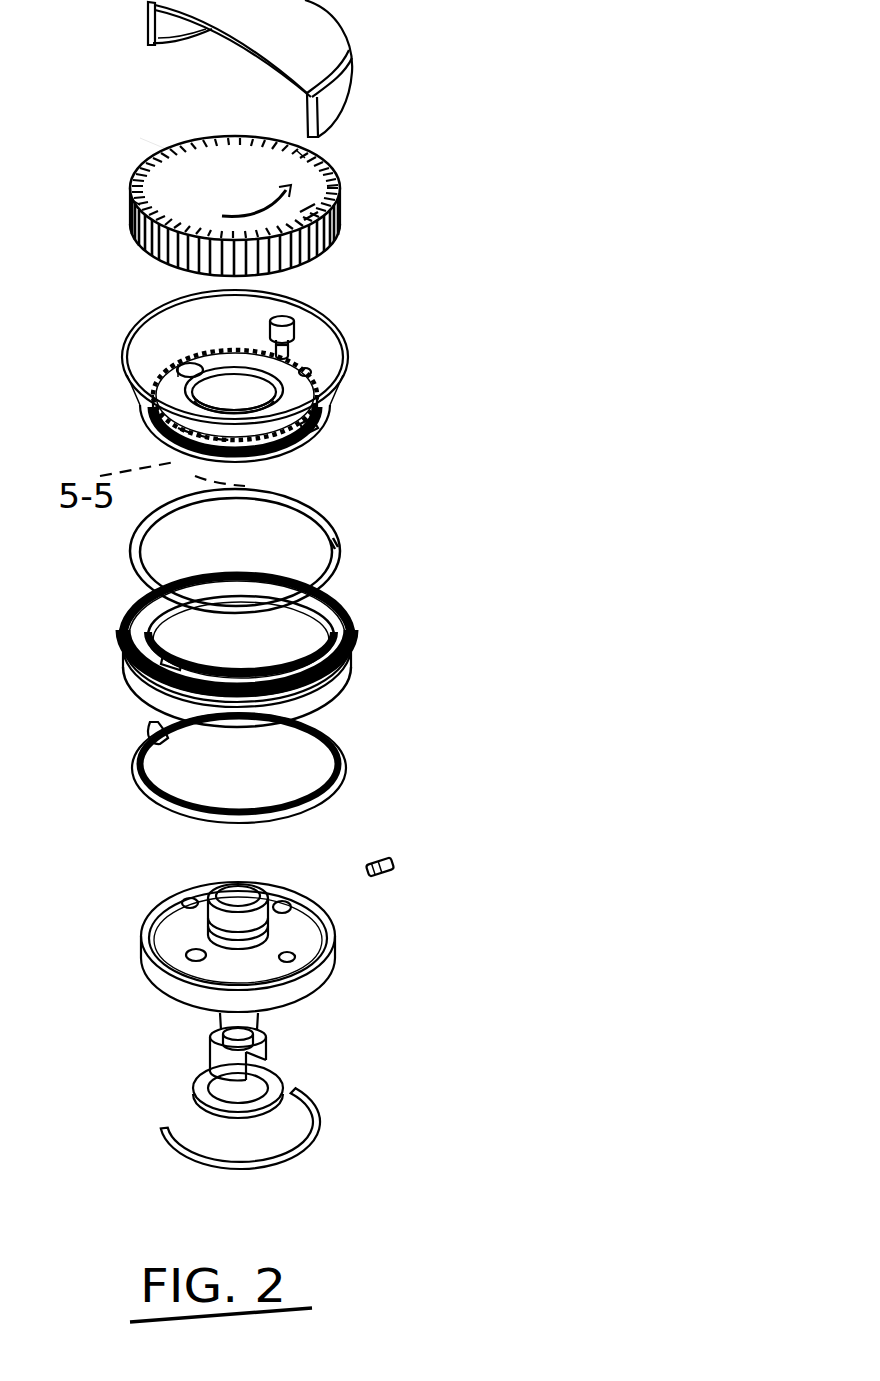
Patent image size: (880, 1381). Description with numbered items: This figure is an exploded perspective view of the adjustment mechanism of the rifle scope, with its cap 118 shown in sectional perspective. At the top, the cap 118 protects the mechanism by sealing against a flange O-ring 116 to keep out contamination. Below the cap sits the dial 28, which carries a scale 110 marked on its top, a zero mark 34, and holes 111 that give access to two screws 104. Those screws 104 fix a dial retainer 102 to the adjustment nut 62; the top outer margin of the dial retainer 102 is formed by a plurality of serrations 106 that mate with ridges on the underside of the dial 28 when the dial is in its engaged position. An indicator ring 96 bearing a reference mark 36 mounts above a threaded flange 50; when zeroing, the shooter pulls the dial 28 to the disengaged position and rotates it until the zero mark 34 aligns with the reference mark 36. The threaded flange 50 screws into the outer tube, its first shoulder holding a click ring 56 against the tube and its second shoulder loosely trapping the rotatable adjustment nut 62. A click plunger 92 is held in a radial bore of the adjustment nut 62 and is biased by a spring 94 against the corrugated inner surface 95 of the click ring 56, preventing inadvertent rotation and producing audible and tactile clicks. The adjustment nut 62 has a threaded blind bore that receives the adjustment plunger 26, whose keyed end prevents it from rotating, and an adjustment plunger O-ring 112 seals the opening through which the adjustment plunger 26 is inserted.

The cap 118 is at (353, 80).
The dial 28 is at (340, 218).
The zero mark 34 is at (327, 240).
The scale 110 is at (174, 153).
The holes 111 is at (300, 148).
The flange O-ring 116 is at (350, 377).
The dial retainer 102 is at (318, 443).
The screws 104 is at (298, 340).
The serrations 106 is at (217, 352).
The indicator ring 96 is at (344, 568).
The reference mark 36 is at (333, 530).
The threaded flange 50 is at (351, 663).
The inner surface 95 is at (148, 712).
The click ring 56 is at (345, 767).
The click plunger 92 is at (394, 864).
The adjustment nut 62 is at (335, 963).
The adjustment plunger 26 is at (268, 1058).
The adjustment plunger O-ring 112 is at (275, 1097).
The spring 94 is at (318, 1145).